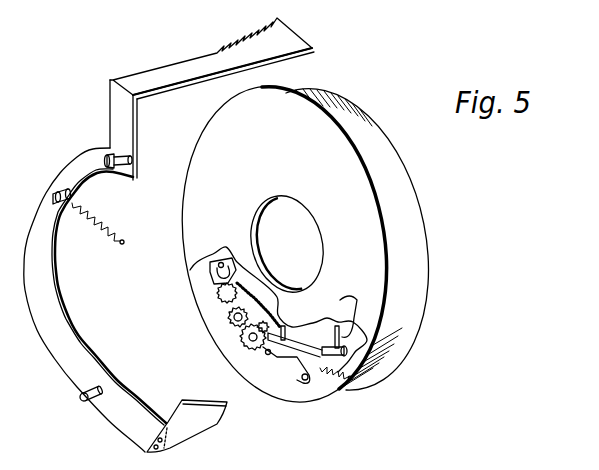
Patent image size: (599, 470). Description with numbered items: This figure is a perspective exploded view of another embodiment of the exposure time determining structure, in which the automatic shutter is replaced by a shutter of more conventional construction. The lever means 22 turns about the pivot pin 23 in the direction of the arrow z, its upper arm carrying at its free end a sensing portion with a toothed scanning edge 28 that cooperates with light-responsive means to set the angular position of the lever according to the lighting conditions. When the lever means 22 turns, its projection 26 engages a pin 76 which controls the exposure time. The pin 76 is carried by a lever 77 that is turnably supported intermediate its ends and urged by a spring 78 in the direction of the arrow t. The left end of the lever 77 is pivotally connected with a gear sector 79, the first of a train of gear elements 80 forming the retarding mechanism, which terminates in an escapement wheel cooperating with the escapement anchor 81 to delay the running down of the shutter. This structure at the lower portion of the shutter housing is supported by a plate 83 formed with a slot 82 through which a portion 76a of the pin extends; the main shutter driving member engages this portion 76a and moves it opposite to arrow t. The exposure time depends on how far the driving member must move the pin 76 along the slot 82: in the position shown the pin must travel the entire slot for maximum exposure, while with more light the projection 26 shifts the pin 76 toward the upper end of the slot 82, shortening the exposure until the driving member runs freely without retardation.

The lever means 22 is at (63, 181).
The pivot pin 23 is at (133, 155).
The projection 26 is at (210, 426).
The scanning edge 28 is at (257, 40).
The pin 76 is at (327, 350).
The pin portion 76a is at (349, 340).
The lever 77 is at (298, 360).
The spring 78 is at (336, 382).
The gear sector 79 is at (281, 322).
The train of gear elements 80 is at (240, 346).
The escapement anchor 81 is at (211, 272).
The slot 82 is at (337, 326).
The plate 83 is at (357, 360).